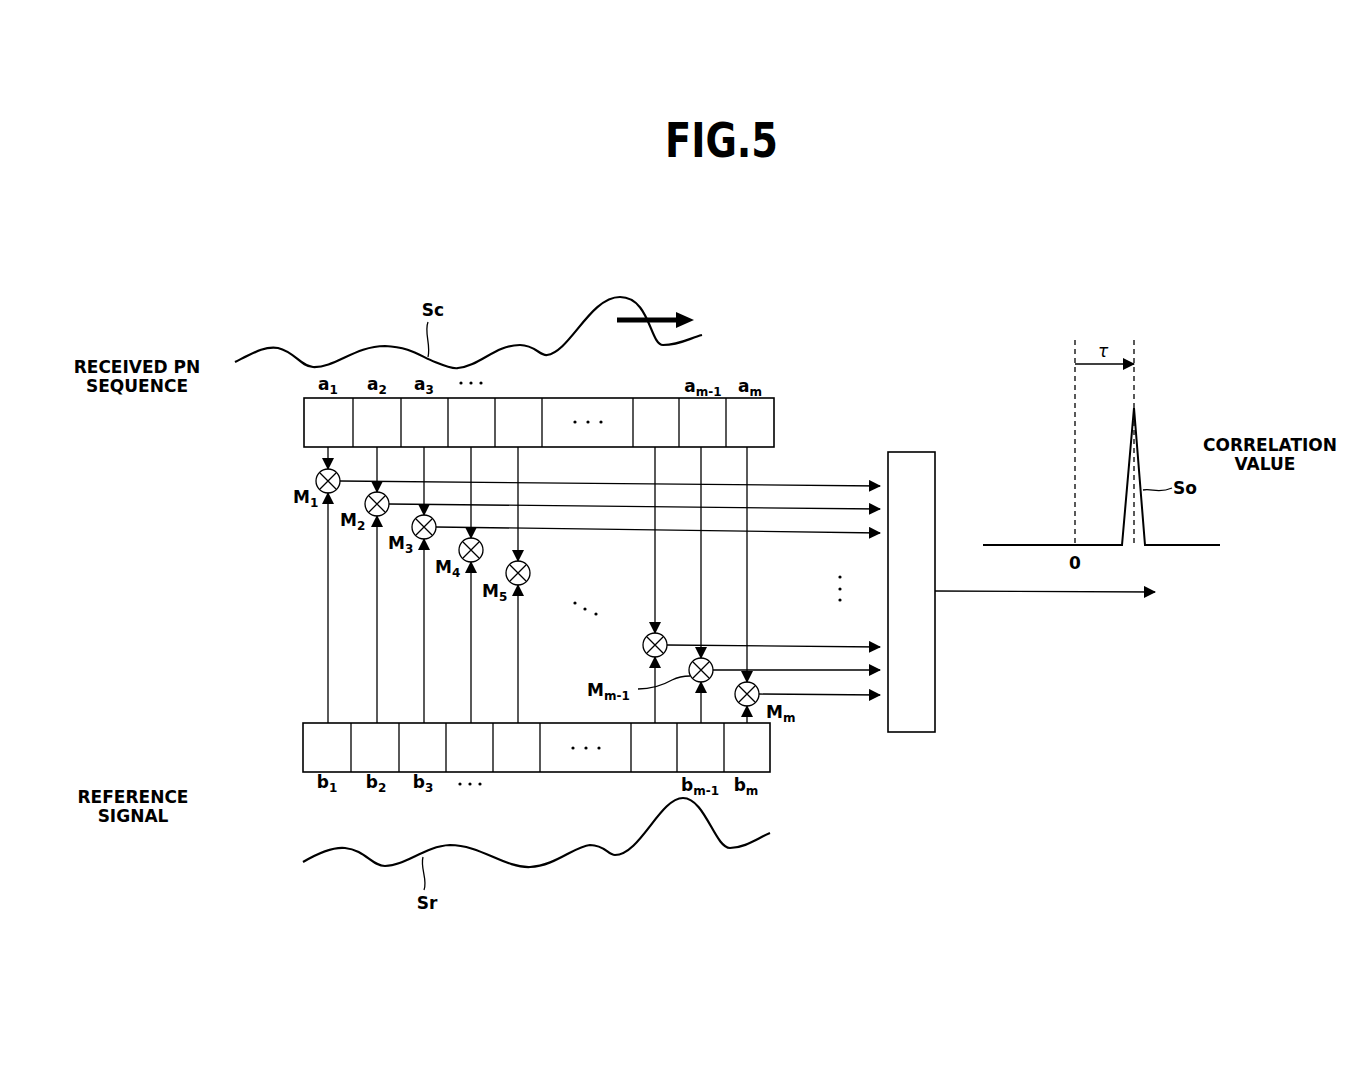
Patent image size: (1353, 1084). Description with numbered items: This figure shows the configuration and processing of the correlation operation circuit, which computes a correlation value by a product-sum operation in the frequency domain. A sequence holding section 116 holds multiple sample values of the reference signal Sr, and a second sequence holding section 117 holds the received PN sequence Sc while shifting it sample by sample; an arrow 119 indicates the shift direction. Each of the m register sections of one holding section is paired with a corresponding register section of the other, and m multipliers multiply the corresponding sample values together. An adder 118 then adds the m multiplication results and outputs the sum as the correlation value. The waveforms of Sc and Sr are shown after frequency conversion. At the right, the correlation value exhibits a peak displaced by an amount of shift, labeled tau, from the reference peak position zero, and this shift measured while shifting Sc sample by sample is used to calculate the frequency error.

The sequence holding section 116 is at (582, 773).
The sequence holding section 117 is at (590, 398).
The adder 118 is at (913, 452).
The arrow 119 is at (647, 314).